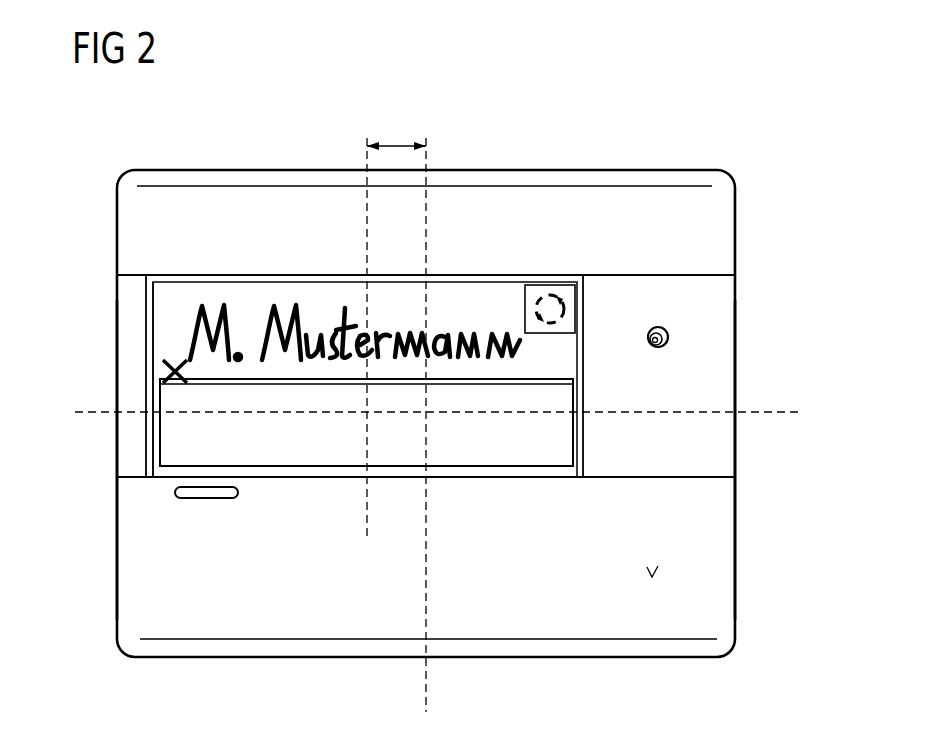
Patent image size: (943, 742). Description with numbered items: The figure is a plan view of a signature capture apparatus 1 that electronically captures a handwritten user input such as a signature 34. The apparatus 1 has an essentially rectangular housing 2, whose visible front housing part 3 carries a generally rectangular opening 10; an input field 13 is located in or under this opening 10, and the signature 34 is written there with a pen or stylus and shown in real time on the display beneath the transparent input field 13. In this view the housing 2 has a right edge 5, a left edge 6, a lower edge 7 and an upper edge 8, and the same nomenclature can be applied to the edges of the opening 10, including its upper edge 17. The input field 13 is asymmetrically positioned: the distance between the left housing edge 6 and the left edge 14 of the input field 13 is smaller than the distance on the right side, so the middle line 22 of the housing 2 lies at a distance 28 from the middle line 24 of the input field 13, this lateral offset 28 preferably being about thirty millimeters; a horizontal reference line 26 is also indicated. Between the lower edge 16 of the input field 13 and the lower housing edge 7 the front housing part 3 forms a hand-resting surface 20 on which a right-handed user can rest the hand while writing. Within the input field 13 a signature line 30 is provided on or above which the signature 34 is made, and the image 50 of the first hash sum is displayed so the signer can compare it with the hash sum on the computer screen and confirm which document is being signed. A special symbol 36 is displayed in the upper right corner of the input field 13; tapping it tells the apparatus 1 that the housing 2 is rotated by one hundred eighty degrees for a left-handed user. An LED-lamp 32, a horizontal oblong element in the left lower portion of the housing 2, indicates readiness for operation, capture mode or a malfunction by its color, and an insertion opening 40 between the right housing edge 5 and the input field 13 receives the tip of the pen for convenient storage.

The signature capture apparatus 1 is at (530, 132).
The housing 2 is at (768, 245).
The front housing part 3 is at (723, 605).
The right edge 5 is at (735, 505).
The left edge 6 is at (117, 508).
The lower edge 7 is at (610, 657).
The upper edge 8 is at (608, 170).
The rectangular opening 10 is at (197, 275).
The input field 13 is at (333, 283).
The left edge of input field 14 is at (152, 325).
The lower edge of input field 16 is at (487, 477).
The upper edge of display 17 is at (467, 276).
The hand-resting surface 20 is at (652, 577).
The middle line of housing 22 is at (426, 690).
The middle line of input field 24 is at (367, 530).
The horizontal axis 26 is at (787, 412).
The distance 28 is at (390, 145).
The signature line 30 is at (573, 378).
The LED-lamp 32 is at (207, 498).
The signature 34 is at (265, 298).
The special symbol 36 is at (525, 303).
The insertion opening 40 is at (660, 346).
The image 50 is at (550, 457).